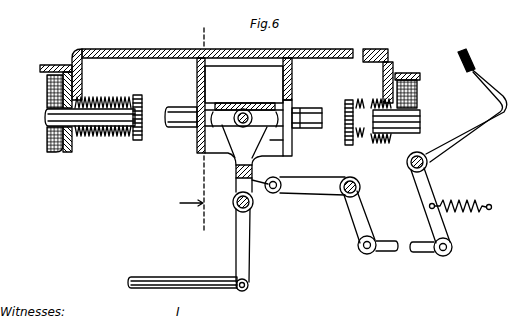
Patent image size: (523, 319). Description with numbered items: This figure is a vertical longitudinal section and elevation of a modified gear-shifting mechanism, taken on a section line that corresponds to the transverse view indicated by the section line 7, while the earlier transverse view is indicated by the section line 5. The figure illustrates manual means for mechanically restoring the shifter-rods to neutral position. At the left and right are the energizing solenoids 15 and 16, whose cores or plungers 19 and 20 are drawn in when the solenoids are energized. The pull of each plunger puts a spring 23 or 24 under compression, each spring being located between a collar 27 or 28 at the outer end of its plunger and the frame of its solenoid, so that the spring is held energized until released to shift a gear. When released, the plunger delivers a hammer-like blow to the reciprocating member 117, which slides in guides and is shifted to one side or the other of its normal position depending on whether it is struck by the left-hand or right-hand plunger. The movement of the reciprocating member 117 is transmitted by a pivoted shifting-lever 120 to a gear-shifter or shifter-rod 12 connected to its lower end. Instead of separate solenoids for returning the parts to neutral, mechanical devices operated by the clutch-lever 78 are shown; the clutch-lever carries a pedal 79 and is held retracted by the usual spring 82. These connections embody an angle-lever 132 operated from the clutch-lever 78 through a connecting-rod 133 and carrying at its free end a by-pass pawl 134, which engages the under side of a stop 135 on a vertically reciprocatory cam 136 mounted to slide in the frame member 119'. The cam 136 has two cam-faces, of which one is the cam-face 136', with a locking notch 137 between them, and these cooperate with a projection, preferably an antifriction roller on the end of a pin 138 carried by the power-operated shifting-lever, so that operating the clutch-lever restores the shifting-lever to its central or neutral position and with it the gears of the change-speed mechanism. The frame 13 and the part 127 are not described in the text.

The section line 5 is at (208, 28).
The section line 7 is at (192, 123).
The gear-shifter 12 is at (193, 288).
The frame 13 is at (500, 118).
The solenoid 15 is at (52, 75).
The solenoid 16 is at (409, 80).
The plunger 19 is at (88, 103).
The plunger 20 is at (418, 120).
The spring 23 is at (128, 96).
The spring 24 is at (380, 141).
The collar 27 is at (144, 111).
The collar 28 is at (349, 146).
The clutch-lever 78 is at (470, 140).
The pedal 79 is at (470, 60).
The spring 82 is at (470, 212).
The reciprocating member 117 is at (185, 107).
The frame member 119' is at (232, 102).
The shifting-lever 120 is at (251, 260).
The pivot 127 is at (236, 212).
The angle-lever 132 is at (333, 196).
The connecting-rod 133 is at (428, 258).
The by-pass pawl 134 is at (255, 202).
The stop 135 is at (225, 180).
The cam 136 is at (264, 136).
The cam-face 136' is at (212, 141).
The locking notch 137 is at (233, 163).
The pin 138 is at (243, 108).